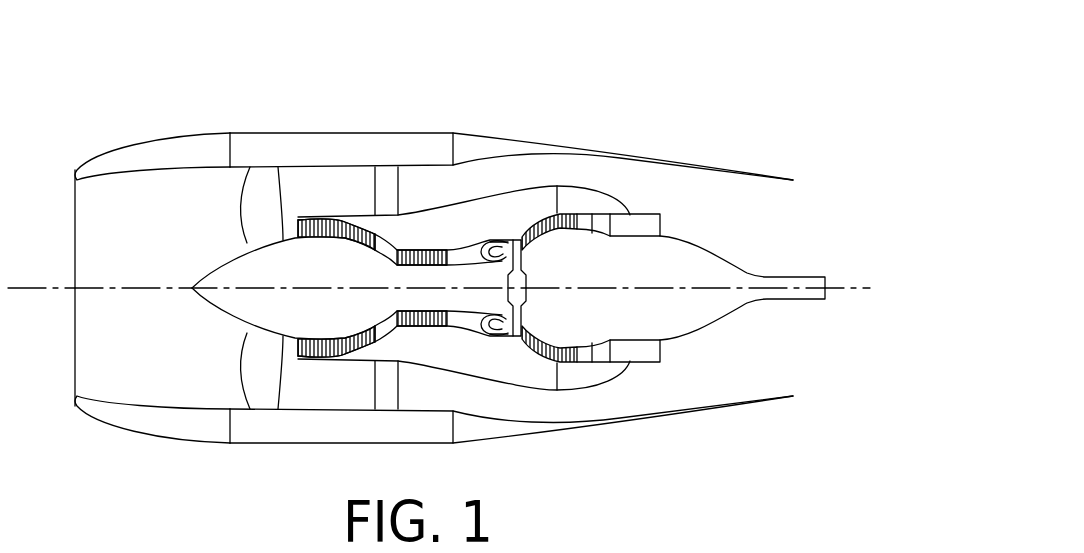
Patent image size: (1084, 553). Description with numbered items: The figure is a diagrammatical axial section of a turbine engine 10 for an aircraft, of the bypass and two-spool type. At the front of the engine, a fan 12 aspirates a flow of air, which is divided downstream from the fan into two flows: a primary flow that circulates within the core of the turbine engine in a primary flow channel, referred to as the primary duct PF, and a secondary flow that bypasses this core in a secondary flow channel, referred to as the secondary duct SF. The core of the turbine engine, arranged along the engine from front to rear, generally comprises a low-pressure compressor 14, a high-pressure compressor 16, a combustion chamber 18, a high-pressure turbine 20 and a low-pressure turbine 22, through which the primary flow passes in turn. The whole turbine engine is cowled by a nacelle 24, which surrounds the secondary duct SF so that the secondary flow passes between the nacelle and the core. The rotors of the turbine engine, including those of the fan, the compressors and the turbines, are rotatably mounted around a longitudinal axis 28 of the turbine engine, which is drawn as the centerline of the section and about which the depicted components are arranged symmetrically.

The turbine engine 10 is at (235, 95).
The fan 12 is at (253, 358).
The low-pressure compressor 14 is at (320, 221).
The high-pressure compressor 16 is at (433, 251).
The combustion chamber 18 is at (490, 241).
The high-pressure turbine 20 is at (517, 240).
The low-pressure turbine 22 is at (585, 216).
The nacelle 24 is at (348, 145).
The longitudinal axis 28 is at (20, 288).
The secondary duct SF is at (313, 398).
The primary duct PF is at (387, 327).